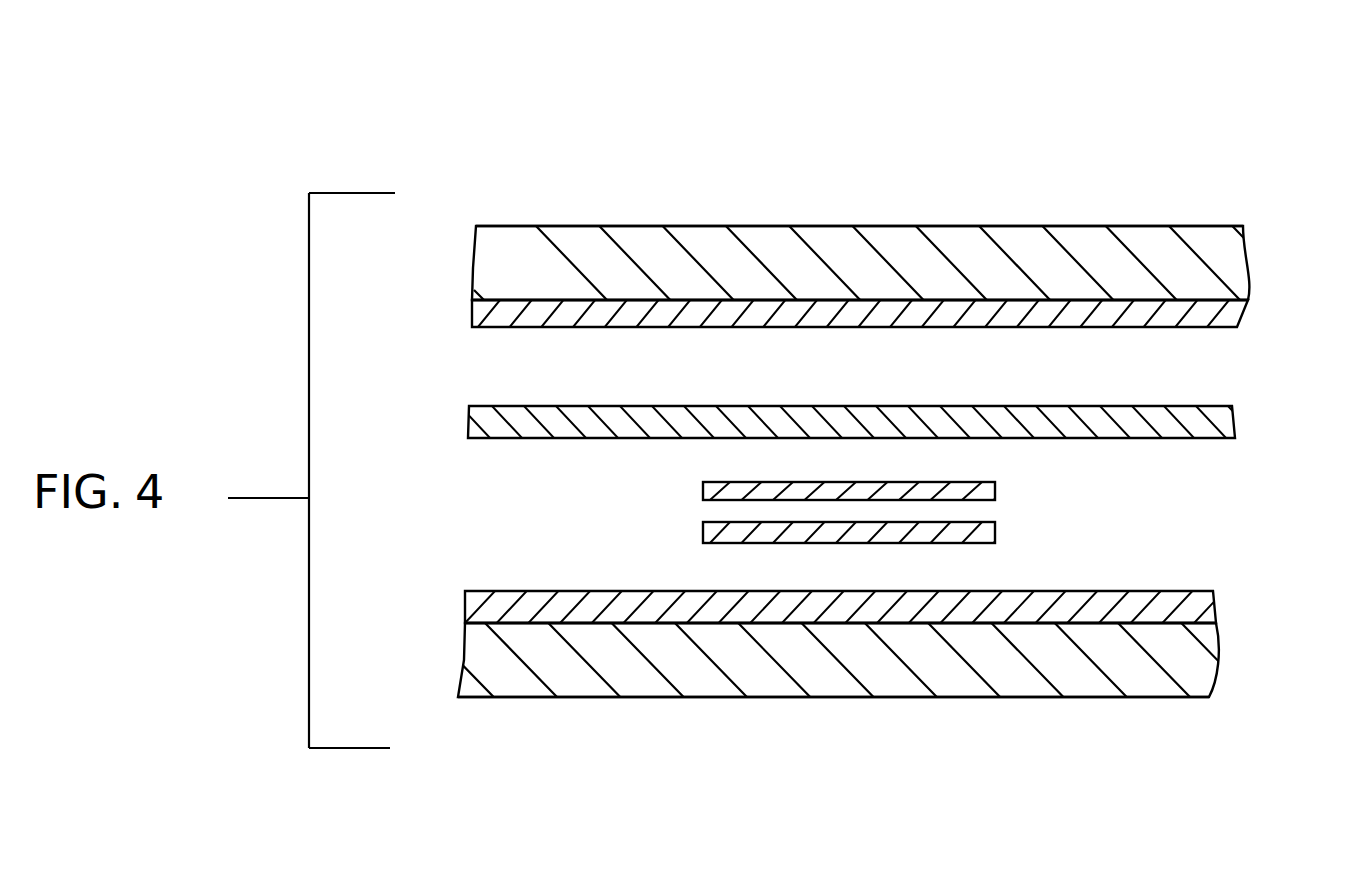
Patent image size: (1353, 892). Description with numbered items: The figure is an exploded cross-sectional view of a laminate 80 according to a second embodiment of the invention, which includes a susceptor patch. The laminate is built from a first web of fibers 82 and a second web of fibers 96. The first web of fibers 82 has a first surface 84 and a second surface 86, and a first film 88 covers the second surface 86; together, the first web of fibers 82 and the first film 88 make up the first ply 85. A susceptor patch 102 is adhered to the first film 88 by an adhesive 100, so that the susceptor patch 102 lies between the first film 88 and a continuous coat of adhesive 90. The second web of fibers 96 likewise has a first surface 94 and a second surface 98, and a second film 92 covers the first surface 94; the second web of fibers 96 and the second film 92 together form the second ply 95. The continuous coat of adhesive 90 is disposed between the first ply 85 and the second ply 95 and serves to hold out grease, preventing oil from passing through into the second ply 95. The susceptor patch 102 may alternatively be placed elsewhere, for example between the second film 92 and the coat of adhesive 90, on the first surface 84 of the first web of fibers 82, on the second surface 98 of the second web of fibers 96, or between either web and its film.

The laminate 80 is at (585, 212).
The first web of fibers 82 is at (1118, 662).
The first surface 84 is at (837, 697).
The first ply 85 is at (452, 649).
The second surface 86 is at (650, 623).
The first film 88 is at (1188, 607).
The continuous coat of adhesive 90 is at (1210, 425).
The second film 92 is at (1197, 316).
The first surface 94 is at (830, 300).
The second ply 95 is at (457, 278).
The second web of fibers 96 is at (1185, 268).
The second surface 98 is at (1088, 226).
The adhesive 100 is at (980, 528).
The susceptor patch 102 is at (982, 488).